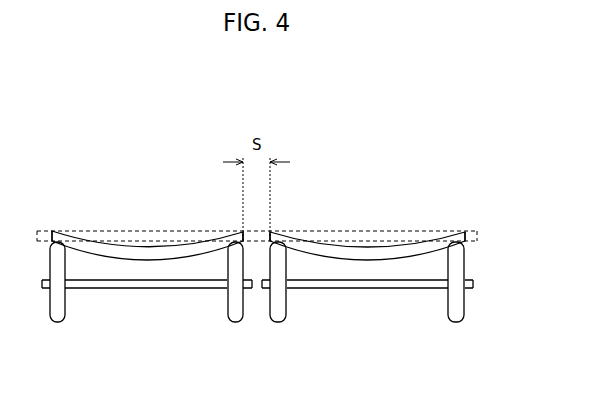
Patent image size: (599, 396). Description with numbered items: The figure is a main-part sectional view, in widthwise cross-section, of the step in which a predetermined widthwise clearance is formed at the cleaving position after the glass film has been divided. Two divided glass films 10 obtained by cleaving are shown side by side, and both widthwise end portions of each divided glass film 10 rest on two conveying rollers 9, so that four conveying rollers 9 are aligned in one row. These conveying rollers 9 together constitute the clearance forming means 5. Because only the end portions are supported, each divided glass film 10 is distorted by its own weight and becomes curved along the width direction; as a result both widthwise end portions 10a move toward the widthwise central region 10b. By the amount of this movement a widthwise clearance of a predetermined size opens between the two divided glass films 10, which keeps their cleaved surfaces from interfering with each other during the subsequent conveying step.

The clearance forming means 5 is at (498, 142).
The conveying roller 9 is at (57, 323).
The divided glass film 10 is at (133, 247).
The widthwise end portion 10a is at (55, 231).
The widthwise central region 10b is at (145, 258).